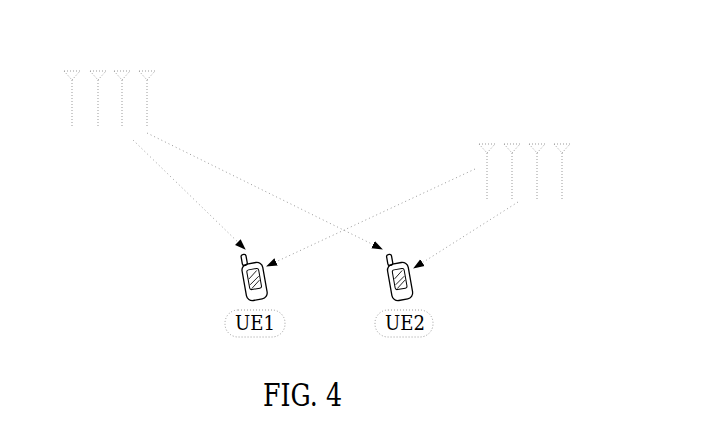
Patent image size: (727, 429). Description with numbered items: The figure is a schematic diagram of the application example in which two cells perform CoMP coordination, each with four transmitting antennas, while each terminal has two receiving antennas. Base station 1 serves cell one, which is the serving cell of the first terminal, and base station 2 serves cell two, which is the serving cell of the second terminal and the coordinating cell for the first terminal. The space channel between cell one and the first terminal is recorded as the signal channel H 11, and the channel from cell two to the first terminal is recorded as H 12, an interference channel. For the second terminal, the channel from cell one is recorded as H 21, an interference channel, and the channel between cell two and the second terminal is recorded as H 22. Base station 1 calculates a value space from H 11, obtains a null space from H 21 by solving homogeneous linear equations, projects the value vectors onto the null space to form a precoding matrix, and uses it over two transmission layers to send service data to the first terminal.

The base station 1 is at (114, 101).
The base station 2 is at (529, 177).
The space channel H11 11 is at (192, 194).
The space channel H21 21 is at (264, 191).
The space channel H12 12 is at (371, 217).
The space channel H22 22 is at (466, 235).